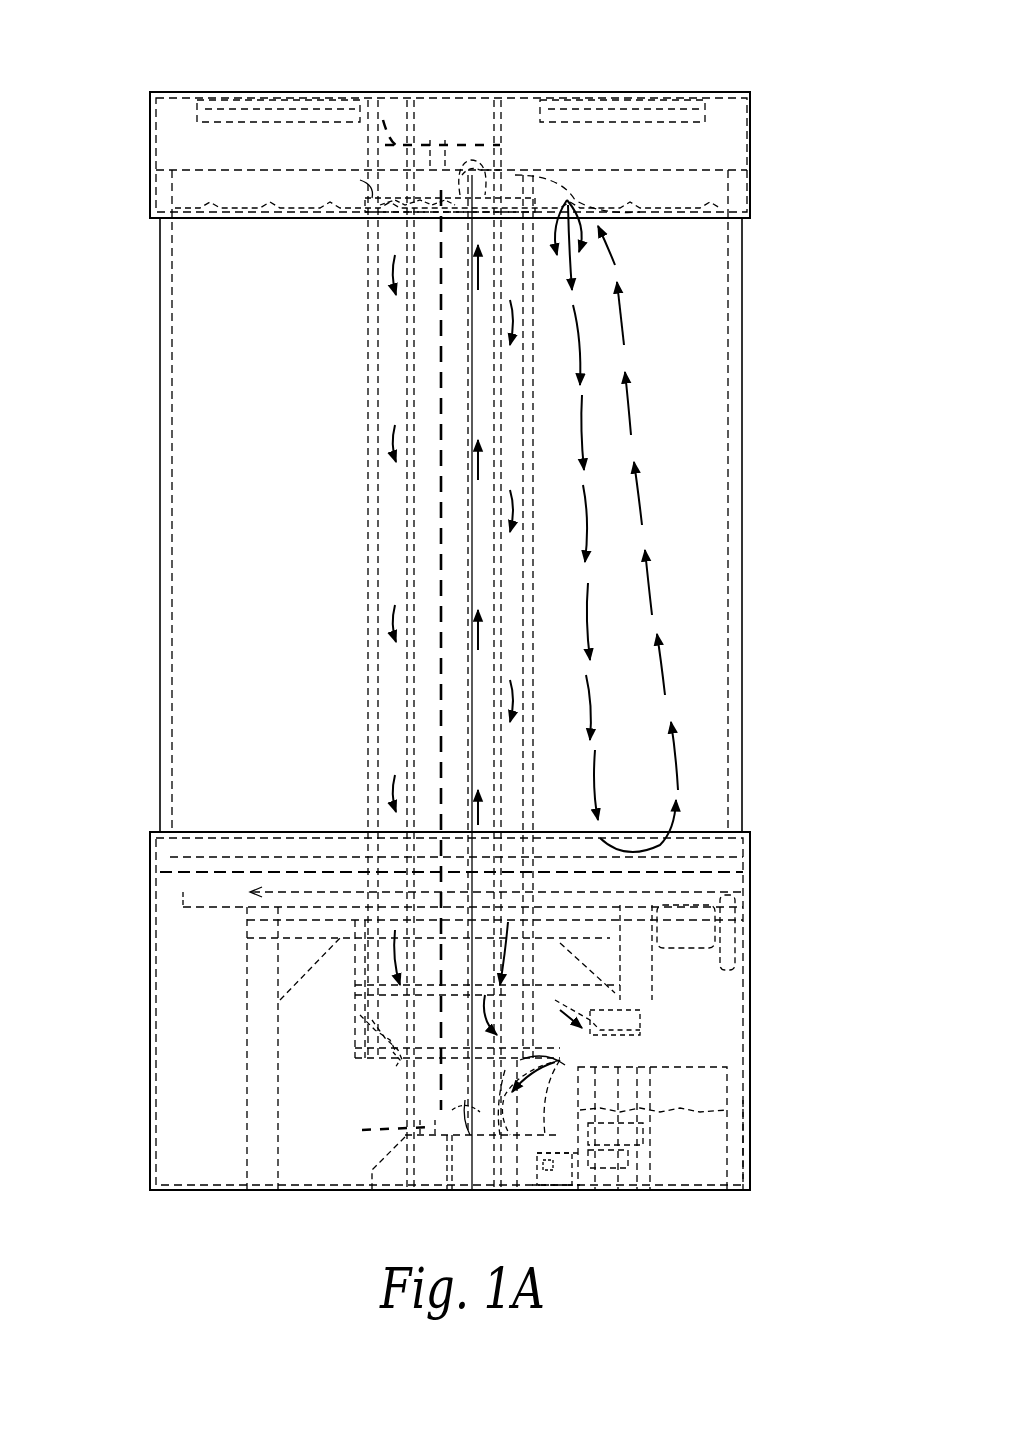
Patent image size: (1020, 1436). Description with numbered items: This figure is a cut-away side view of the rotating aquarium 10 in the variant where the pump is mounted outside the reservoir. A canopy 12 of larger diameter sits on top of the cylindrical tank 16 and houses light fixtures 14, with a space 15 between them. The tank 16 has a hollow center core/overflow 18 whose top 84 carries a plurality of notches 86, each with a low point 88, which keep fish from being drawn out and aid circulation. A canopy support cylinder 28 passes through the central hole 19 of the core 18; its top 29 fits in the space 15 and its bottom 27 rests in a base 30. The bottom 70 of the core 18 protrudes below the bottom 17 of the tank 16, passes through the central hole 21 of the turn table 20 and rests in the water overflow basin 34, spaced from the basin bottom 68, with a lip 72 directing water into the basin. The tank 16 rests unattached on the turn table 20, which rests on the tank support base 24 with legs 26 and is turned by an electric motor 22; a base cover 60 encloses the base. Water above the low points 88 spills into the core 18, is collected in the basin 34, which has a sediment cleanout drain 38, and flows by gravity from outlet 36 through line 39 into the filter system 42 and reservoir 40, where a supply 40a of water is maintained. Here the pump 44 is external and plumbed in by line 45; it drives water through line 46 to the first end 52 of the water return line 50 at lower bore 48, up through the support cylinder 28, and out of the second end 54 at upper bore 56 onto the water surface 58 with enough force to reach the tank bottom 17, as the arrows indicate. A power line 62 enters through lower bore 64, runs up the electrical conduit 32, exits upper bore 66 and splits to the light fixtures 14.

The aquarium 10 is at (790, 80).
The canopy 12 is at (150, 150).
The light fixtures 14 is at (315, 105).
The space 15 is at (405, 100).
The tank 16 is at (157, 515).
The bottom of tank 17 is at (717, 865).
The hollow center core/overflow 18 is at (530, 577).
The central hole 19 is at (510, 990).
The turn table 20 is at (182, 905).
The central hole 21 is at (322, 880).
The electric motor 22 is at (680, 920).
The tank support base 24 is at (245, 965).
The legs 26 is at (265, 1170).
The bottom of support cylinder 27 is at (472, 1140).
The canopy support cylinder 28 is at (408, 580).
The top of support cylinder 29 is at (497, 100).
The base 30 is at (375, 1165).
The electrical conduit 32 is at (440, 678).
The water overflow basin 34 is at (372, 1037).
The outlet 36 is at (590, 1012).
The sediment cleanout drain 38 is at (393, 1058).
The line 39 is at (595, 1040).
The reservoir 40 is at (630, 1082).
The supply of water 40a is at (690, 1140).
The filter system 42 is at (700, 1080).
The pump 44 is at (545, 1165).
The line 45 is at (575, 1130).
The line 46 is at (520, 1110).
The lower bore 48 is at (460, 1150).
The water return line 50 is at (468, 665).
The first end of water return line 52 is at (505, 1135).
The second end of water return line 54 is at (570, 202).
The upper bore 56 is at (470, 180).
The water surface 58 is at (700, 210).
The base cover 60 is at (150, 1010).
The power line 62 is at (440, 140).
The lower bore 64 is at (425, 1150).
The upper bore 66 is at (457, 165).
The bottom of basin 68 is at (560, 1020).
The bottom of core 70 is at (370, 1000).
The lip 72 is at (360, 1000).
The top of core 84 is at (366, 186).
The notches 86 is at (388, 202).
The low point 88 is at (394, 206).